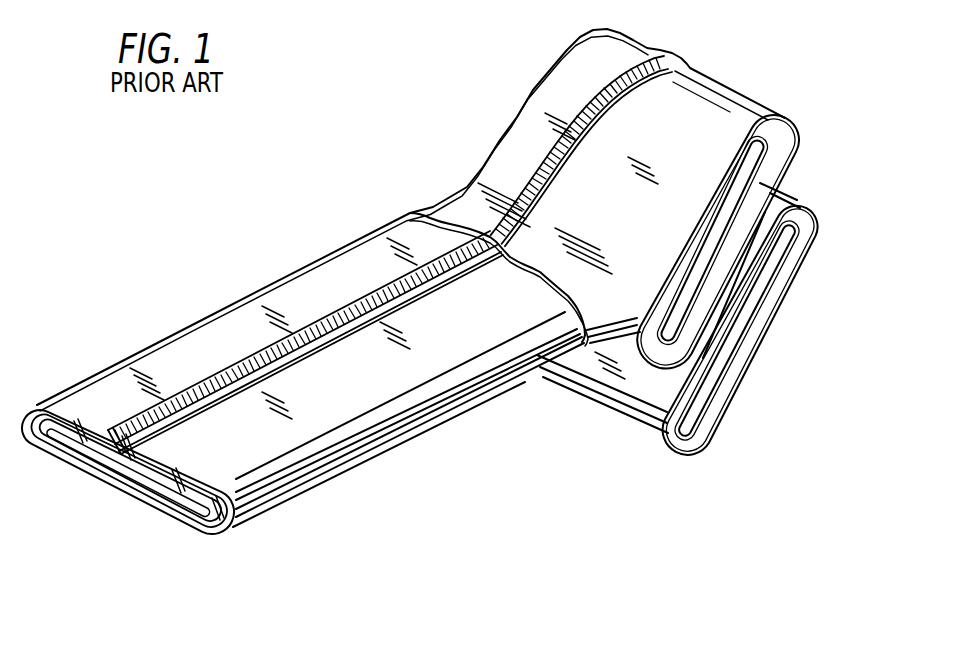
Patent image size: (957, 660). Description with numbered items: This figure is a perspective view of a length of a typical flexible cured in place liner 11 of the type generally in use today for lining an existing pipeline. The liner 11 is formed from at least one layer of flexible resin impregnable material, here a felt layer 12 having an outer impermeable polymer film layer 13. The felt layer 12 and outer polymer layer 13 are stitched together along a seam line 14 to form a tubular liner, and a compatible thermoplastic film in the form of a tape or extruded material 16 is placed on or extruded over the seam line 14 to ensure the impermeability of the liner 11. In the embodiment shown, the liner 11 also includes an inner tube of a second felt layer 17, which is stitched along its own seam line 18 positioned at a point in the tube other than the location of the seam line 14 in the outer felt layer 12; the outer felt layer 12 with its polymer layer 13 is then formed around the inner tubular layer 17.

The cured in place liner 11 is at (232, 248).
The felt layer 12 is at (40, 448).
The outer impermeable polymer film layer 13 is at (187, 357).
The seam line 14 is at (147, 427).
The tape or extruded material 16 is at (388, 297).
The second felt layer 17 is at (77, 468).
The seam line 18 is at (103, 473).